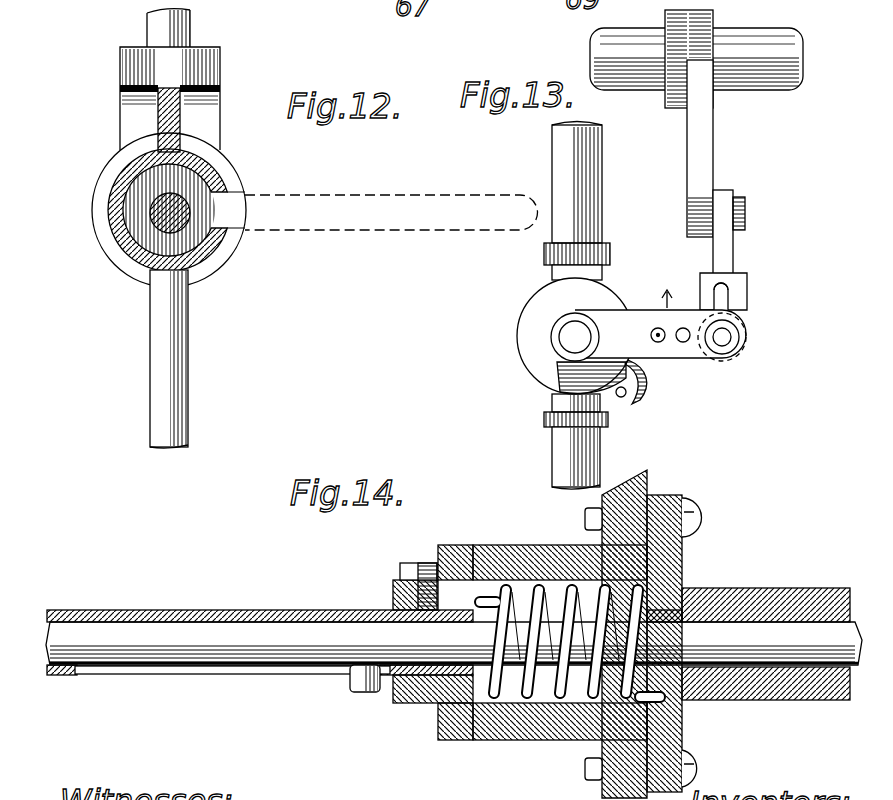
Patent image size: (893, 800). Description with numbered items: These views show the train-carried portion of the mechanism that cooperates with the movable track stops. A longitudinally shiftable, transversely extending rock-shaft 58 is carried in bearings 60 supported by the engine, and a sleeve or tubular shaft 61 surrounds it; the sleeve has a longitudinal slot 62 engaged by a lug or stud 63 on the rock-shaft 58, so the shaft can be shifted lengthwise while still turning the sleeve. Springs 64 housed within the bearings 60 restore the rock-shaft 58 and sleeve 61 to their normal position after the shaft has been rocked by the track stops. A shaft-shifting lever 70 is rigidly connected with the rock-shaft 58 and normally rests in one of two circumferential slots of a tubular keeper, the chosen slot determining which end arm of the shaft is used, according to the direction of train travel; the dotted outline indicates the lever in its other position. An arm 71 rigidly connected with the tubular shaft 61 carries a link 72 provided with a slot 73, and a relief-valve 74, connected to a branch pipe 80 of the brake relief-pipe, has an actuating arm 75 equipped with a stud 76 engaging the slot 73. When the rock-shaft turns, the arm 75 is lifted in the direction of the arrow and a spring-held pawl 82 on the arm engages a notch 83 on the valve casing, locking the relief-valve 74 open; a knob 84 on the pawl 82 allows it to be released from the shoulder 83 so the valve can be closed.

In FIG. 12, the rock-shaft 58 is at (160, 228).
In FIG. 14, the rock-shaft 58 is at (454, 643).
In FIG. 14, the bearings 60 is at (530, 531).
In FIG. 13, the sleeve or tubular shaft 61 is at (696, 59).
In FIG. 14, the sleeve or tubular shaft 61 is at (270, 594).
In FIG. 14, the longitudinal slot 62 is at (262, 678).
In FIG. 14, the lug or stud 63 is at (360, 694).
In FIG. 14, the springs 64 is at (558, 697).
In FIG. 12, the shaft-shifting lever 70 is at (178, 391).
In FIG. 13, the arm 71 is at (697, 165).
In FIG. 13, the link 72 is at (723, 255).
In FIG. 13, the slot 73 is at (723, 296).
In FIG. 13, the relief-valve 74 is at (565, 340).
In FIG. 13, the actuating arm 75 is at (693, 360).
In FIG. 13, the stud 76 is at (726, 338).
In FIG. 13, the branch pipe 80 is at (595, 166).
In FIG. 13, the spring-held pawl 82 is at (653, 385).
In FIG. 13, the notch or shoulder 83 is at (590, 372).
In FIG. 13, the knob 84 is at (623, 397).